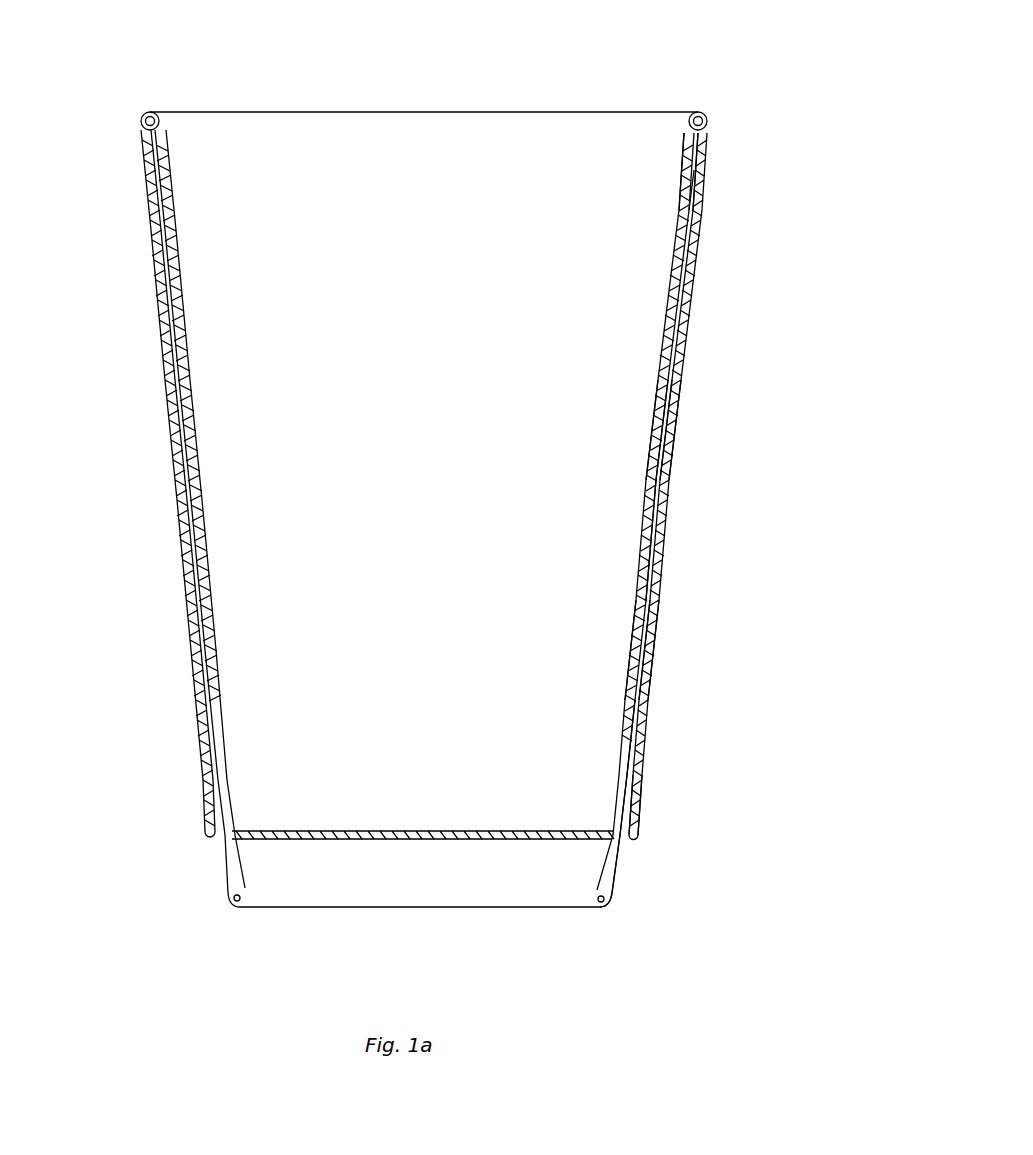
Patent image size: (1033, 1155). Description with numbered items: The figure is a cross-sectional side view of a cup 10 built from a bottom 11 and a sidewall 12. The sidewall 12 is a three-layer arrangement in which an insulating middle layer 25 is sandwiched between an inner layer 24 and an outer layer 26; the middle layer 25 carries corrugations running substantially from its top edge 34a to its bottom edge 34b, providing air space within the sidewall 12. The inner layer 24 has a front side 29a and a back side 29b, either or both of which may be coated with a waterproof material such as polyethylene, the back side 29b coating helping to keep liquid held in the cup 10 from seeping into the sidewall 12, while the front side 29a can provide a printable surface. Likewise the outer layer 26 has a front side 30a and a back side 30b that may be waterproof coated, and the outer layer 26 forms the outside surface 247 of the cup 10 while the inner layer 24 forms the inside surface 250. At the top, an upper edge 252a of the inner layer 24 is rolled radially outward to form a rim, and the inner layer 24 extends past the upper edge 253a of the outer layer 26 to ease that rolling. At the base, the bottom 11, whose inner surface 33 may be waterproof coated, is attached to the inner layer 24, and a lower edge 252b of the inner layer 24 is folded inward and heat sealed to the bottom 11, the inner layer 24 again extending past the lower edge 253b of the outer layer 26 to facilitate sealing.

The cup 10 is at (708, 66).
The bottom 11 is at (512, 840).
The sidewall 12 is at (170, 646).
The inner layer 24 is at (680, 176).
The insulating middle layer 25 is at (672, 400).
The outer layer 26 is at (667, 501).
The outside surface 247 is at (670, 457).
The inside surface 250 is at (660, 452).
The upper edge of inner layer 252a is at (712, 124).
The lower edge of inner layer 252b is at (608, 905).
The upper edge of outer layer 253a is at (703, 132).
The lower edge of outer layer 253b is at (637, 836).
The front side of inner layer 29a is at (612, 870).
The back side of inner layer 29b is at (627, 705).
The front side of outer layer 30a is at (657, 640).
The back side of outer layer 30b is at (655, 606).
The inner surface of bottom 33 is at (317, 831).
The top edge of middle layer 34a is at (690, 189).
The bottom edge of middle layer 34b is at (622, 778).